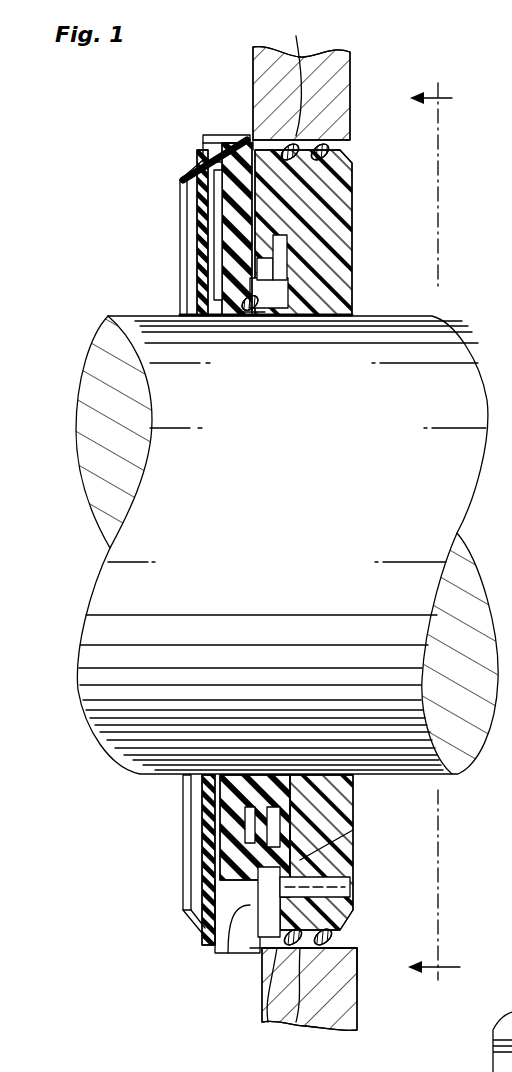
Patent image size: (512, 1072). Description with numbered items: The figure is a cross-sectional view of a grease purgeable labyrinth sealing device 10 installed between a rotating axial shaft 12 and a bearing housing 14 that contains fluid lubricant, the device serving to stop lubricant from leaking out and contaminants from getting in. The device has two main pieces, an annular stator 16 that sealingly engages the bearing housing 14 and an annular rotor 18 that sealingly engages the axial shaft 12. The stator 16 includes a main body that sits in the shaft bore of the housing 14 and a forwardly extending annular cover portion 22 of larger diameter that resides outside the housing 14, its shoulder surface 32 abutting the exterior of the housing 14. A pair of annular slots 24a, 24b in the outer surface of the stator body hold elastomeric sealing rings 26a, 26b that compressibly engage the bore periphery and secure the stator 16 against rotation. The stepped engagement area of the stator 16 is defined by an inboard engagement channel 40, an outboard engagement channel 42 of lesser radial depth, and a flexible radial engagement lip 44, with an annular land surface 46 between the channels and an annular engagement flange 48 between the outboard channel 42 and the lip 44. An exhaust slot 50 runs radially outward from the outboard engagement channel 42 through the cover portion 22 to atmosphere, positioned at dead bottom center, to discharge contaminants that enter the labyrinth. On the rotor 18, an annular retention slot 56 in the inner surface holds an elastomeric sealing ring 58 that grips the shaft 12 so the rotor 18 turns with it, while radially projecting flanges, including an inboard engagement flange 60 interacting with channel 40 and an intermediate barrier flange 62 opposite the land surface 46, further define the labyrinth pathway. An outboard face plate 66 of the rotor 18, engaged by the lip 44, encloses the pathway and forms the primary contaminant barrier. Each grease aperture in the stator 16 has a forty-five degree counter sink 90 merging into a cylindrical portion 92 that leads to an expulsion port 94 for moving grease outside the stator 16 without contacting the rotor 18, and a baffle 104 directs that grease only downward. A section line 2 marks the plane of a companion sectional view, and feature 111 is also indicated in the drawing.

The sealing device 10 is at (130, 133).
The axial shaft 12 is at (298, 523).
The bearing housing 14 is at (340, 74).
The annular stator 16 is at (338, 200).
The annular rotor 18 is at (218, 145).
The annular cover portion 22 is at (215, 940).
The annular slot 24a is at (356, 975).
The annular slot 24b is at (272, 1024).
The elastomeric sealing ring 26a is at (337, 940).
The elastomeric sealing ring 26b is at (300, 1020).
The shoulder surface 32 is at (253, 140).
The inboard engagement channel 40 is at (330, 838).
The outboard engagement channel 42 is at (217, 827).
The radial engagement lip 44 is at (198, 926).
The annular land surface 46 is at (330, 862).
The annular engagement flange 48 is at (208, 883).
The exhaust slot 50 is at (232, 912).
The annular retention slot 56 is at (245, 311).
The elastomeric sealing ring 58 is at (260, 318).
The inboard engagement flange 60 is at (263, 270).
The intermediate barrier flange 62 is at (283, 262).
The outboard face plate 66 is at (187, 212).
The counter sink 90 is at (343, 887).
The cylindrical portion 92 is at (330, 882).
The expulsion port 94 is at (267, 927).
The baffle 104 is at (296, 73).
The slot 111 is at (200, 228).
The section line 2- 2 is at (434, 539).